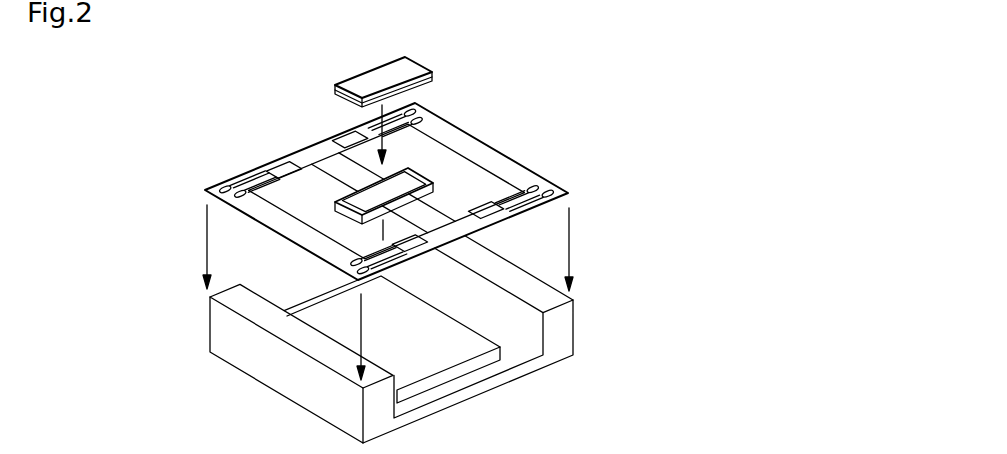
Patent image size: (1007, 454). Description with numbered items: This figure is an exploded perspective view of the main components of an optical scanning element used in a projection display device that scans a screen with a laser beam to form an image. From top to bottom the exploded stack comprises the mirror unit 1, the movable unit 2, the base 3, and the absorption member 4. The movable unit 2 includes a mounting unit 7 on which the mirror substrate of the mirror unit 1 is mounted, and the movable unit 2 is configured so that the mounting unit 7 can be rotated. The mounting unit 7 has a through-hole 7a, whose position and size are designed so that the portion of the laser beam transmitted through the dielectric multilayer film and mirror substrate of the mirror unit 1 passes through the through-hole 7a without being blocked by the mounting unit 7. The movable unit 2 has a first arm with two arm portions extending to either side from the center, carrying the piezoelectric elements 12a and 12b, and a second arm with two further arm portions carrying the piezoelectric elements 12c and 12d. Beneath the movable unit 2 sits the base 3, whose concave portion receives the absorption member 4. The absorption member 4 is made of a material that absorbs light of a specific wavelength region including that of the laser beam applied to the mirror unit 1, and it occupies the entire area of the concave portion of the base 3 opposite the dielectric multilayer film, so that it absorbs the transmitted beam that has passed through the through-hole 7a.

The mirror unit 1 is at (432, 75).
The movable unit 2 is at (535, 165).
The base 3 is at (263, 358).
The absorption member 4 is at (437, 357).
The mounting unit 7 is at (421, 179).
The through-hole 7a is at (356, 204).
The piezoelectric element 12a is at (494, 212).
The piezoelectric element 12b is at (415, 248).
The piezoelectric element 12c is at (348, 129).
The piezoelectric element 12d is at (279, 161).